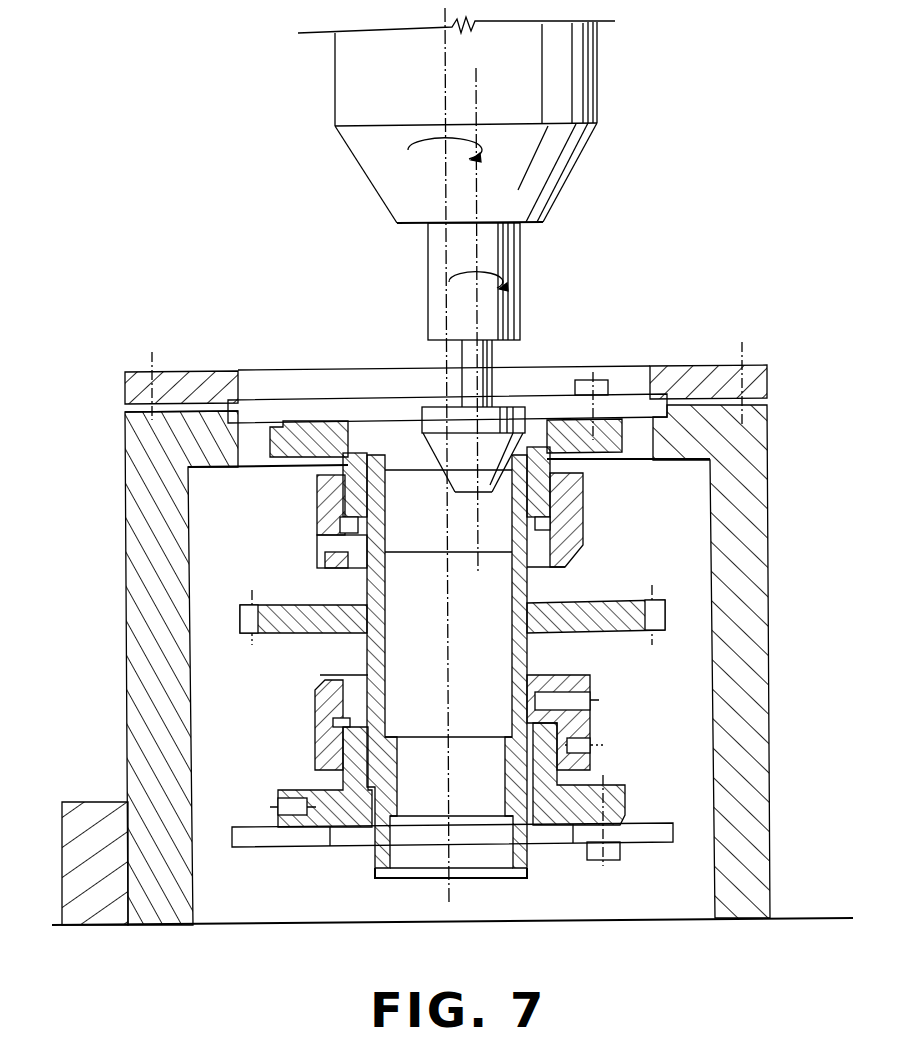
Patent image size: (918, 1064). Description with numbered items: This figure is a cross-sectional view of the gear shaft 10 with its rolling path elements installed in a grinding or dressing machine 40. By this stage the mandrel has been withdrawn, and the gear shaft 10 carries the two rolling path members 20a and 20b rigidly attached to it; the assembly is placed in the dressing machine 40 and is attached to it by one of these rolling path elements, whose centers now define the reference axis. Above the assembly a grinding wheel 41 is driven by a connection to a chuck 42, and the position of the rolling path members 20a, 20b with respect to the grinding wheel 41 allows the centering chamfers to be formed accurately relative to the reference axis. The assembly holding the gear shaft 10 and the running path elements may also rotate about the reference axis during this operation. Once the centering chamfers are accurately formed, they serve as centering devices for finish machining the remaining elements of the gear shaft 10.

The workpiece hub 10 is at (521, 592).
The rolling path member 20a is at (632, 407).
The rolling path member 20b is at (655, 830).
The grinding or dressing machine 40 is at (646, 321).
The grinding wheel 41 is at (433, 443).
The chuck 42 is at (570, 157).